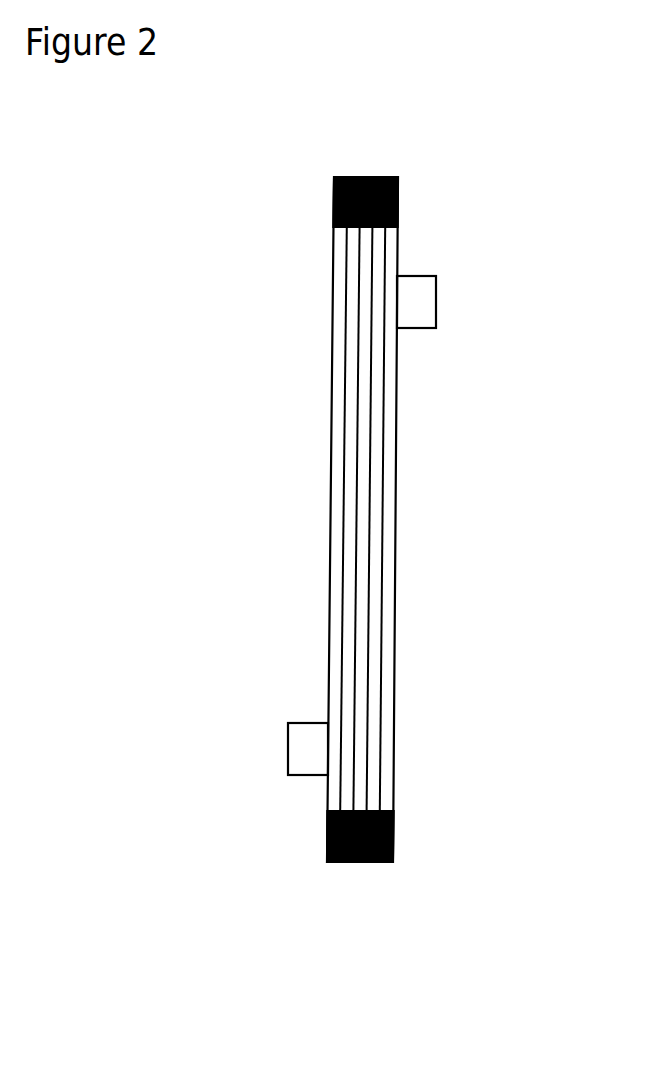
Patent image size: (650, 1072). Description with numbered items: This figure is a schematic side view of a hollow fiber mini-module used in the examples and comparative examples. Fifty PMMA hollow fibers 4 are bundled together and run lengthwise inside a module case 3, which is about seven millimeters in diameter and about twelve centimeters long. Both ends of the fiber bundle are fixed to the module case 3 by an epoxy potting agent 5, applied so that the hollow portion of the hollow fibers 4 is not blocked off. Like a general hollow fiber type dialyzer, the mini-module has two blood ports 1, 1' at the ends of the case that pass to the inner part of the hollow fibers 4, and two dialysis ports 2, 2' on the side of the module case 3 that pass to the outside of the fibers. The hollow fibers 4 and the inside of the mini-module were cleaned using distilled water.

The blood port 1 is at (391, 166).
The blood port 1' is at (394, 874).
The dialysis port 2 is at (477, 298).
The dialysis port 2' is at (231, 745).
The module case 3 is at (410, 468).
The hollow fiber 4 is at (384, 617).
The potting agent 5 is at (399, 207).